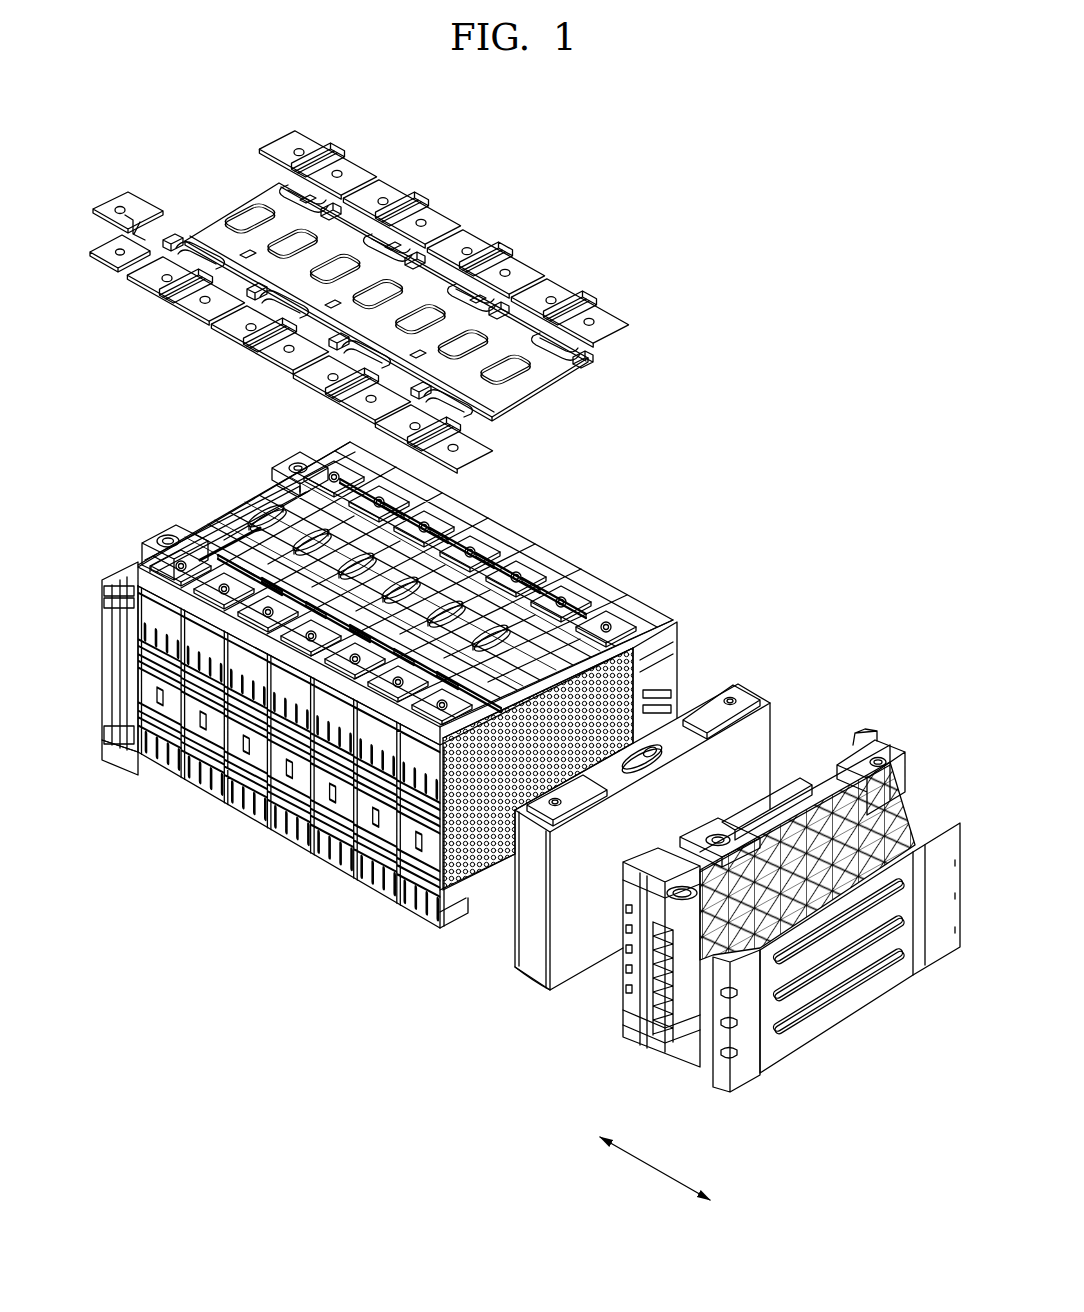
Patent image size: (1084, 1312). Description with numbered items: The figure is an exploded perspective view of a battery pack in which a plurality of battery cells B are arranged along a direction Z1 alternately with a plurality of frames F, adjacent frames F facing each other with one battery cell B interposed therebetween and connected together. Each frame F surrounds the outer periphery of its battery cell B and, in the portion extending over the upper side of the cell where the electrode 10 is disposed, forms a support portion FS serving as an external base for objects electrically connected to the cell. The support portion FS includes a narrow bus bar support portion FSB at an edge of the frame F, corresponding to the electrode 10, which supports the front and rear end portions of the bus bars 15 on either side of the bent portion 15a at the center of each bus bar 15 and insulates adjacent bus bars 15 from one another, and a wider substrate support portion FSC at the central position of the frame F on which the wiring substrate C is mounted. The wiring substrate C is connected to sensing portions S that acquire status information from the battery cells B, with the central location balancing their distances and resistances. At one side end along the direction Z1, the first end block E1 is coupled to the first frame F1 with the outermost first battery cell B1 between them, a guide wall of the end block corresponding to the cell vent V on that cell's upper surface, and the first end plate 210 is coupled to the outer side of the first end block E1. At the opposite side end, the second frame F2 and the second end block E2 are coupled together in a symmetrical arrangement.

The wiring substrate C is at (535, 385).
The bus bar 15 is at (558, 290).
The bent portion 15a is at (586, 300).
The sensing portion S is at (196, 232).
The support portion FS is at (127, 465).
The substrate support portion FSC is at (290, 523).
The bus bar support portion FSB is at (193, 573).
The battery cell B is at (610, 613).
The second end block E2 is at (107, 753).
The second frame F2 is at (148, 773).
The frame F is at (605, 575).
The first frame F1 is at (668, 603).
The electrode 10 is at (713, 700).
The first battery cell B1 is at (763, 683).
The cell vent V is at (653, 753).
The first end block E1 is at (893, 720).
The first end plate 210 is at (848, 1005).
The direction Z1 is at (655, 1168).